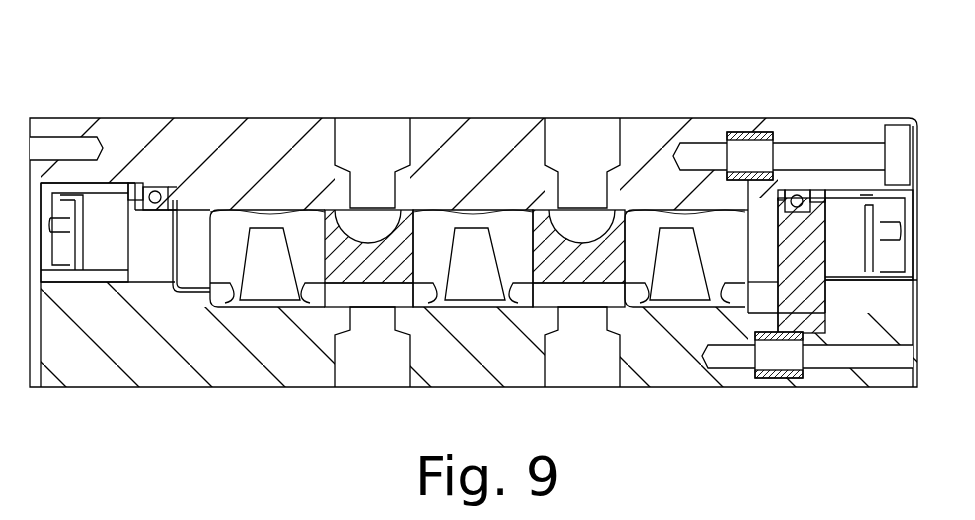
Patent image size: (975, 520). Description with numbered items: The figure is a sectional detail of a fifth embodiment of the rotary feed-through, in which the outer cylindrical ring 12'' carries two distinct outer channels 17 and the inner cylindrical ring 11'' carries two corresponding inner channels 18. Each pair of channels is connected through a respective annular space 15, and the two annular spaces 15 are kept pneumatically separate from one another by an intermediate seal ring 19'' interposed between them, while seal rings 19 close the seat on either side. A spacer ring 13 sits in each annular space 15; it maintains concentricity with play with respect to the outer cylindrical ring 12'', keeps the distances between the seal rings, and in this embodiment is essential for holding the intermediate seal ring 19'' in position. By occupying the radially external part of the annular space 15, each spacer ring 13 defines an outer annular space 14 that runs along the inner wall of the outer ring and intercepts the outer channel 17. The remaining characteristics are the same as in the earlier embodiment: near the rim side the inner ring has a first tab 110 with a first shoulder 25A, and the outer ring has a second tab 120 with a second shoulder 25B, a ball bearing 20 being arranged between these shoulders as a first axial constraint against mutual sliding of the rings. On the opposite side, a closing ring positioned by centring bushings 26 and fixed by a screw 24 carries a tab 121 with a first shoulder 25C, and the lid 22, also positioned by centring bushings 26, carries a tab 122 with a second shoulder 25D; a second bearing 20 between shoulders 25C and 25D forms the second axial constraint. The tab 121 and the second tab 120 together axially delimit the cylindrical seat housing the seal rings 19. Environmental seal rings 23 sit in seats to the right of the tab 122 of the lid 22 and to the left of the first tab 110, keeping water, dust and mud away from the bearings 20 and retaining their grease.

The outer cylindrical ring 12'' is at (473, 221).
The inner cylindrical ring 11'' is at (394, 365).
The outer channel 17 is at (376, 140).
The inner channel 18 is at (357, 363).
The outer annular space 14 is at (381, 241).
The annular spacer 13 is at (381, 271).
The annular space 15 is at (381, 303).
The seal ring 19 is at (477, 258).
The intermediate seal ring 19'' is at (473, 258).
The first tab 110 is at (147, 237).
The second tab 120 is at (190, 240).
The bearing 20 is at (155, 188).
The first shoulder 25A is at (138, 210).
The second shoulder 25B is at (175, 205).
The first shoulder 25C is at (787, 193).
The second shoulder 25D is at (798, 247).
The tab 121 is at (760, 213).
The tab 122 is at (833, 243).
The environmental seal ring 23 is at (910, 237).
The screw 24 is at (837, 353).
The lid 22 is at (837, 312).
The centring bushing 26 is at (753, 133).